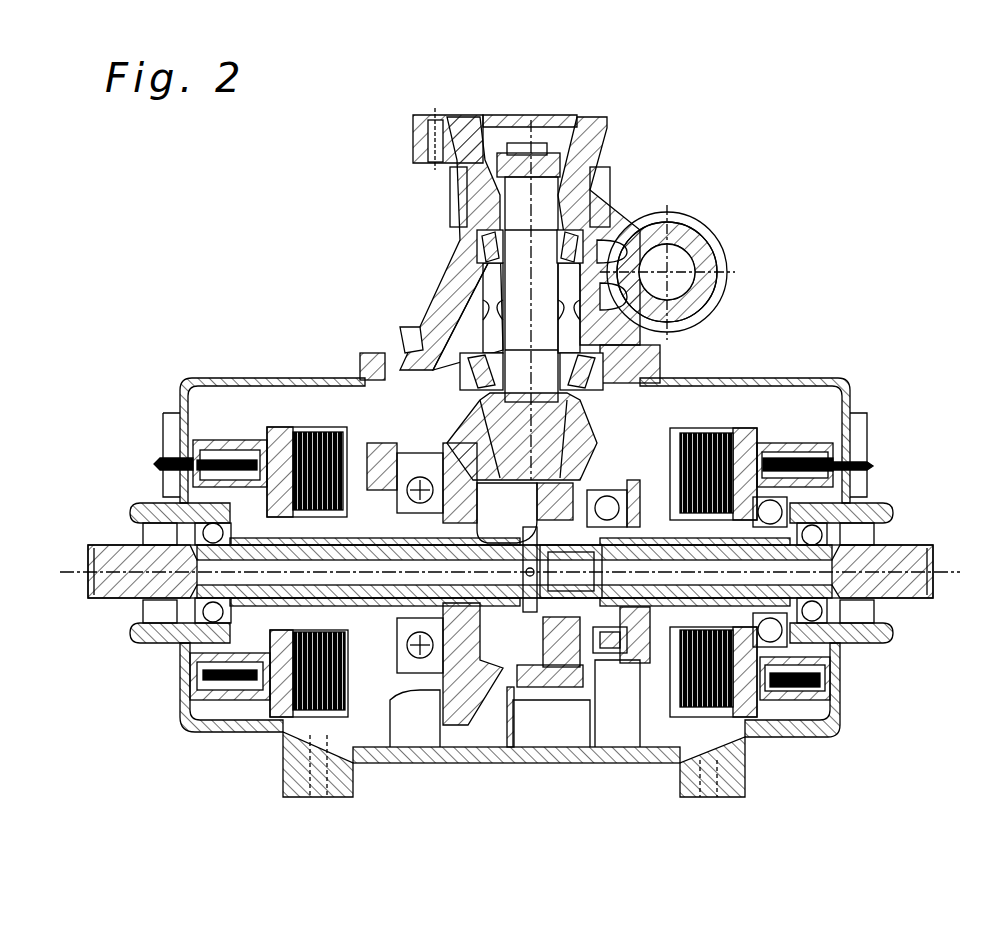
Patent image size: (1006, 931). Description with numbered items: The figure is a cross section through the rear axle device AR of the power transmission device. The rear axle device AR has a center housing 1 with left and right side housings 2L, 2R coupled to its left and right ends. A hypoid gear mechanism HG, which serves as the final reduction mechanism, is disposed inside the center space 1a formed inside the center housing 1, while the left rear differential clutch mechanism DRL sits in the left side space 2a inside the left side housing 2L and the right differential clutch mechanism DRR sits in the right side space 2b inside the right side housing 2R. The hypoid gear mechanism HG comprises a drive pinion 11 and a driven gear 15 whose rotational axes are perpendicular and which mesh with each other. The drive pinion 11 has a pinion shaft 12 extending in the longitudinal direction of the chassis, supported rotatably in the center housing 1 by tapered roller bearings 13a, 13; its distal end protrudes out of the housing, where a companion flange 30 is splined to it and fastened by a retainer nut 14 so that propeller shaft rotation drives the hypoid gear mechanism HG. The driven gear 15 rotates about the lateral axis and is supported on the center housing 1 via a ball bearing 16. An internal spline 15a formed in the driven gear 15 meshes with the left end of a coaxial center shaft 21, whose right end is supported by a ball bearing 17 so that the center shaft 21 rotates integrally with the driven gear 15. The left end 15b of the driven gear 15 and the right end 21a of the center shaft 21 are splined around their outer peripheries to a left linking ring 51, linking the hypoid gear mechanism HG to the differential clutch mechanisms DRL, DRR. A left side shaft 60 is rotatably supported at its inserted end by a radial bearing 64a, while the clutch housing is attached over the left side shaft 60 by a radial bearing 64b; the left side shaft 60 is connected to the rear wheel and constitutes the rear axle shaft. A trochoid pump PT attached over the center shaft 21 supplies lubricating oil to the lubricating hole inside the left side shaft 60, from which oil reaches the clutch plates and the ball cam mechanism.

The center housing 1 is at (443, 262).
The center space 1a is at (440, 310).
The left side housing 2L is at (196, 378).
The right side housing 2R is at (846, 378).
The left side space 2a is at (293, 417).
The right side space 2b is at (785, 419).
The drive pinion 11 is at (592, 430).
The pinion shaft 12 is at (542, 305).
The lower bearing 13 is at (633, 355).
The tapered roller bearing 13a is at (583, 240).
The retainer nut 14 is at (550, 152).
The driven gear 15 is at (507, 735).
The internal spline 15a is at (480, 610).
The left end of the driven gear 15b is at (372, 650).
The ball bearing 16 is at (420, 662).
The ball bearing 17 is at (618, 655).
The center shaft 21 is at (508, 493).
The right end of the center shaft 21a is at (642, 647).
The companion flange 30 is at (600, 150).
The left linking ring 51 is at (377, 505).
The left side shaft 60 is at (895, 545).
The radial bearing 64a is at (375, 572).
The radial bearing 64b is at (665, 572).
The rear axle device AR is at (772, 182).
The hypoid gear mechanism HG is at (450, 402).
The trochoid pump PT is at (562, 680).
The left rear differential clutch mechanism DRL is at (258, 700).
The right differential clutch mechanism DRR is at (775, 715).